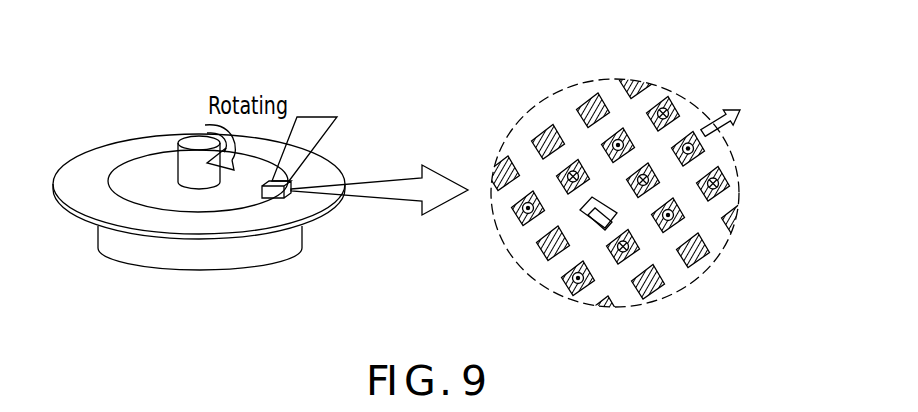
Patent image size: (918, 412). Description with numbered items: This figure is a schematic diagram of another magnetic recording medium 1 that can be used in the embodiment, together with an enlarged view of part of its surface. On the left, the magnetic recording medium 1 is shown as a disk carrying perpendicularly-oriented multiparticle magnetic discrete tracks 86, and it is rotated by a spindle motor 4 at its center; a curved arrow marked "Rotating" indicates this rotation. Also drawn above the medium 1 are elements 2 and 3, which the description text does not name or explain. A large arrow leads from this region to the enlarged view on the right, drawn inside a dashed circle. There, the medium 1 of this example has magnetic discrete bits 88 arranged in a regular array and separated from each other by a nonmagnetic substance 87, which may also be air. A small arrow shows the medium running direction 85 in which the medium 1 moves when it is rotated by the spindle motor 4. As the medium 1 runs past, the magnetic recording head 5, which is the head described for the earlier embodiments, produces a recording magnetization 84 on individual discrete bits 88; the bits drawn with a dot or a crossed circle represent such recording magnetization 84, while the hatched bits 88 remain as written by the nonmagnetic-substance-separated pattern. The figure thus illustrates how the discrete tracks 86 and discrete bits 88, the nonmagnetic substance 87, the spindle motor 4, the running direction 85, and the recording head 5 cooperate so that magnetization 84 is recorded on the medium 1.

The magnetic recording medium 1 is at (85, 160).
The magnetic discrete tracks 86 is at (133, 152).
The spindle motor 4 is at (192, 136).
The nozzle 2 is at (312, 120).
The coating head 3 is at (291, 183).
The nonmagnetic substance 87 is at (548, 128).
The magnetic discrete bits 88 is at (597, 98).
The recording magnetization 84 is at (703, 148).
The medium running direction 85 is at (735, 103).
The magnetic recording head 5 is at (585, 220).